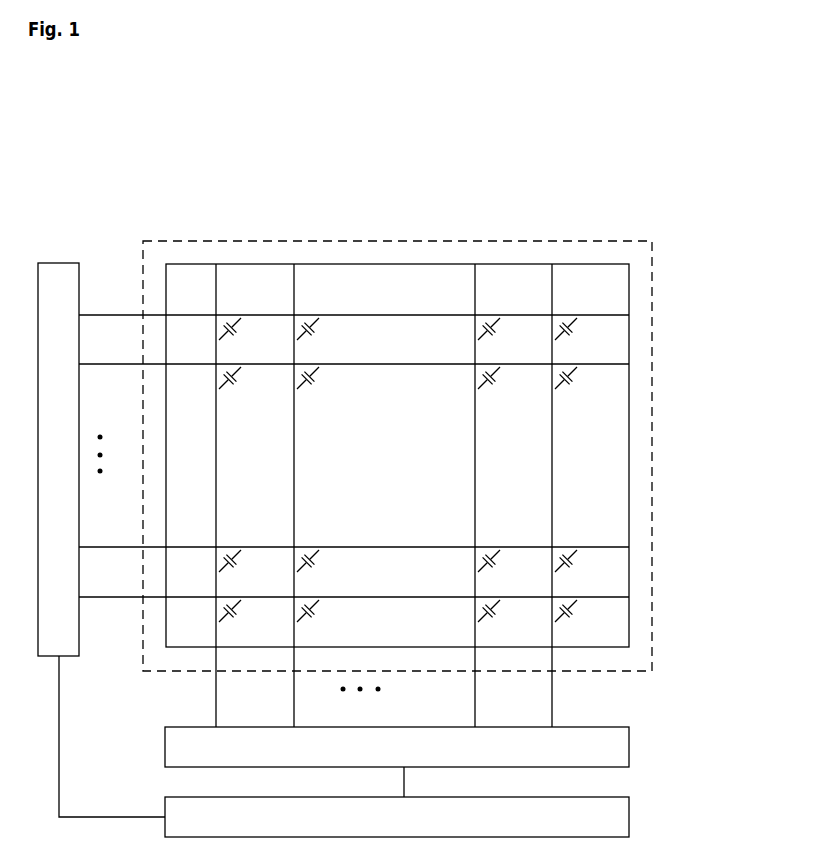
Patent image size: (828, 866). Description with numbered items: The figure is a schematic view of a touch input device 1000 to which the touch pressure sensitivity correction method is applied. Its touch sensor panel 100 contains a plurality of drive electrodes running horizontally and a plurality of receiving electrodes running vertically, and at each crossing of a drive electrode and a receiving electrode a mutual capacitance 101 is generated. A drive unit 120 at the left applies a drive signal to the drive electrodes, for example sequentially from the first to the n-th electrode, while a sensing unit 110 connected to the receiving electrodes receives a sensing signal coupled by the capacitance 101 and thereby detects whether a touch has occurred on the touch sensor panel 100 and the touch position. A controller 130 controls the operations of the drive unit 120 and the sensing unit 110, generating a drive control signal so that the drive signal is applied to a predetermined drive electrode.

The touch input device 1000 is at (620, 169).
The touch sensor panel 100 is at (652, 241).
The capacitance 101 is at (232, 317).
The sensing unit 110 is at (629, 744).
The drive unit 120 is at (62, 262).
The controller 130 is at (629, 817).